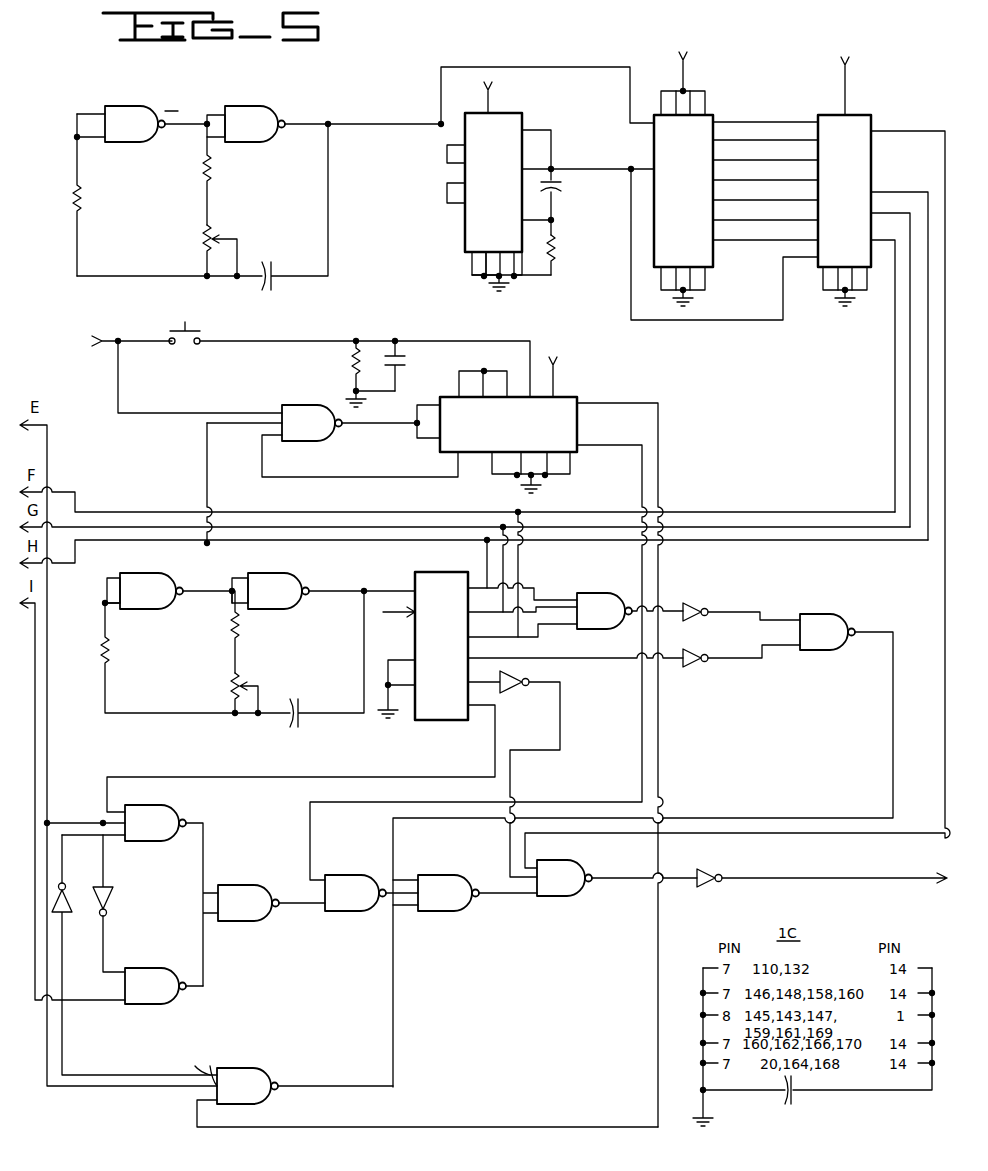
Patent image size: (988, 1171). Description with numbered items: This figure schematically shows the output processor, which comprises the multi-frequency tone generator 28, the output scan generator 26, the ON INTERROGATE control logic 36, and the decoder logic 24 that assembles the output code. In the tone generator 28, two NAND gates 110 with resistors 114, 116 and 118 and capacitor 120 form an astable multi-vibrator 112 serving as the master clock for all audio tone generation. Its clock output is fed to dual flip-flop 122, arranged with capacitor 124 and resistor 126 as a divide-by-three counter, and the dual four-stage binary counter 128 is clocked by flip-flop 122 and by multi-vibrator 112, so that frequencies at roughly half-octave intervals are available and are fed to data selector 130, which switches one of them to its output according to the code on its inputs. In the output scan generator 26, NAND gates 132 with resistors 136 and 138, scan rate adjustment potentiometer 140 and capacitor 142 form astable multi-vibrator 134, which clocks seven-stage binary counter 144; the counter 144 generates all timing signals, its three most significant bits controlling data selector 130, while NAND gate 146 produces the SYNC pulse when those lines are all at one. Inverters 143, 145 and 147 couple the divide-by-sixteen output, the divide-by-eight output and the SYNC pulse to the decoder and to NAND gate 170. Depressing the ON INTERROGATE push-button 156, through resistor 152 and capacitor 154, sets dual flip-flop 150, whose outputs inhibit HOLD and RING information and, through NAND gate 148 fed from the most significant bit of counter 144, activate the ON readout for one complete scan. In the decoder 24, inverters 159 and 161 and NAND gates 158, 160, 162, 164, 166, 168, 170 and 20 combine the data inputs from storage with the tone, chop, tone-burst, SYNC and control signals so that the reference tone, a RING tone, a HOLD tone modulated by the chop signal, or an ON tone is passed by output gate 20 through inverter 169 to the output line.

The output gate 20 is at (572, 889).
The decoder logic 24 is at (517, 1153).
The output scan generator 26 is at (82, 596).
The multi-frequency tone generator 28 is at (317, 75).
The interrogate circuit 36 is at (354, 323).
The NAND gates 110 is at (134, 116).
The astable multi-vibrator 112 is at (190, 104).
The resistor 114 is at (83, 195).
The resistor 116 is at (203, 168).
The resistor 118 is at (200, 240).
The capacitor 120 is at (265, 256).
The dual flip-flop 122 is at (509, 193).
The capacitor 124 is at (577, 190).
The resistor 126 is at (560, 247).
The dual four-stage binary counter 128 is at (698, 201).
The data selector 130 is at (858, 201).
The NAND gates 132 is at (152, 601).
The astable multi-vibrator 134 is at (212, 622).
The resistor 136 is at (110, 646).
The resistor 138 is at (240, 631).
The scan rate adjustment potentiometer 140 is at (230, 687).
The capacitor 142 is at (299, 703).
The inverter 143 is at (508, 690).
The seven-stage binary counter 144 is at (452, 647).
The inverter 145 is at (697, 667).
The NAND gate 146 is at (610, 621).
The inverter 147 is at (689, 601).
The NAND gate 148 is at (320, 433).
The dual flip-flop 150 is at (517, 435).
The resistor 152 is at (350, 348).
The capacitor 154 is at (408, 350).
The ON INTERROGATE push-button 156 is at (193, 330).
The NAND gate 158 is at (158, 833).
The inverter 159 is at (85, 870).
The NAND gate 160 is at (158, 996).
The inverter 161 is at (126, 870).
The NAND gate 162 is at (251, 913).
The NAND gate 164 is at (250, 1096).
The NAND gate 166 is at (358, 903).
The NAND gate 168 is at (451, 903).
The inverter 169 is at (815, 879).
The NAND gate 170 is at (833, 642).